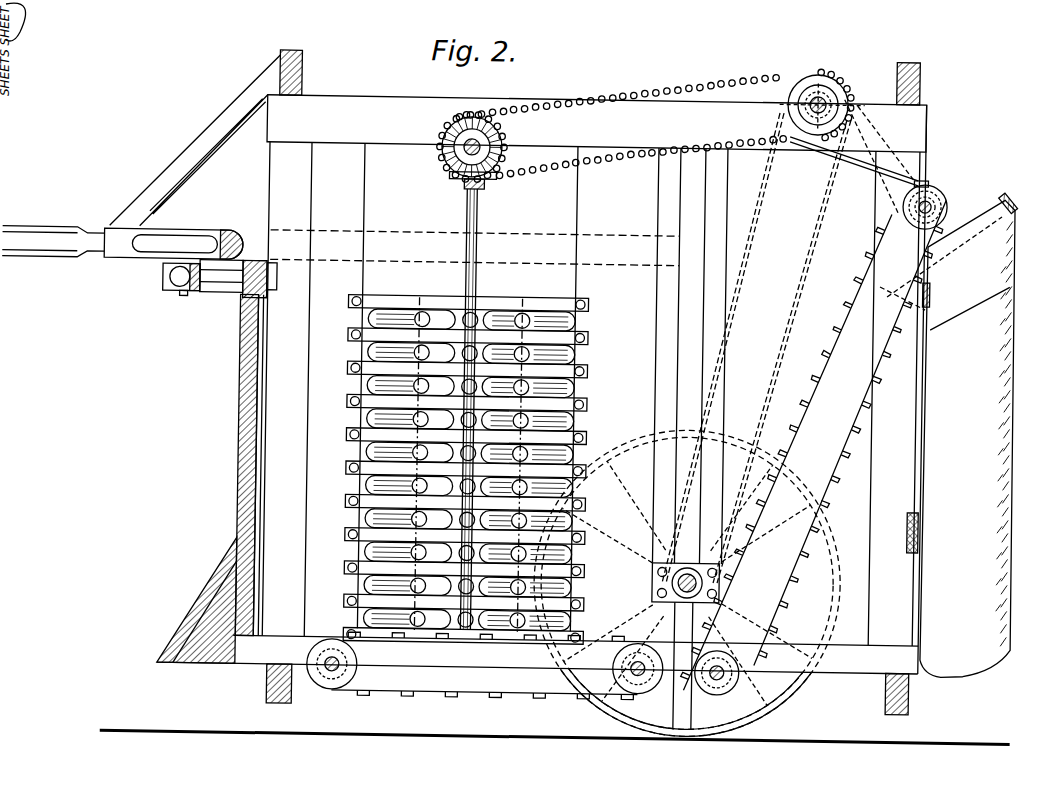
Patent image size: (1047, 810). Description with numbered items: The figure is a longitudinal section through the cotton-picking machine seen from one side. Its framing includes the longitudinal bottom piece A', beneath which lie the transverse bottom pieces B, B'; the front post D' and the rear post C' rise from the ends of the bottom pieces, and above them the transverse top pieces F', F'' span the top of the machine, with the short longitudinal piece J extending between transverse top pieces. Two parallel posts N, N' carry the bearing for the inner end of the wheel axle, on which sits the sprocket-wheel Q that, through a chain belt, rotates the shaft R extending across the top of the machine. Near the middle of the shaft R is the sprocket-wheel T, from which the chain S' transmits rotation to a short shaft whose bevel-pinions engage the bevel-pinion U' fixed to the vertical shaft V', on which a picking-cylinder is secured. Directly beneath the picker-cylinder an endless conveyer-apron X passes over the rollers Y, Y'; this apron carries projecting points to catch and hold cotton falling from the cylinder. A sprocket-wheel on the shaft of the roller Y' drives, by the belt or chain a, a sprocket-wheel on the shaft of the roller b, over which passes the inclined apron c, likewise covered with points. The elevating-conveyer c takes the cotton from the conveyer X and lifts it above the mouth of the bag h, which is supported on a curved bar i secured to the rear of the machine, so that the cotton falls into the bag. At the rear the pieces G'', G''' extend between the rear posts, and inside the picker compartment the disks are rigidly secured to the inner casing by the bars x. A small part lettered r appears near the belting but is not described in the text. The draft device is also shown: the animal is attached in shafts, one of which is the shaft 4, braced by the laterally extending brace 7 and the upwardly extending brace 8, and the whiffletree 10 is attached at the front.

The transverse bottom piece B' is at (597, 123).
The front post D' is at (287, 389).
The rear post C' is at (897, 389).
The longitudinal bottom piece A' is at (537, 654).
The transverse bottom piece B is at (587, 697).
The transverse top piece F' is at (300, 73).
The transverse top piece F'' is at (919, 84).
The short longitudinal piece J is at (210, 478).
The whiffletree 10 is at (210, 280).
The shaft 4 is at (53, 242).
The brace 7 is at (173, 243).
The brace 8 is at (195, 140).
The sprocket-wheel T is at (472, 143).
The bevel-pinion U' is at (460, 173).
The vertical shaft V' is at (477, 409).
The chain S' is at (621, 127).
The shaft R is at (822, 105).
The belt r is at (766, 227).
The belt or chain a is at (824, 417).
The parallel post N' is at (756, 348).
The parallel post N is at (687, 583).
The sprocket-wheel Q is at (686, 571).
The endless conveyer-apron X is at (484, 666).
The roller Y is at (339, 663).
The roller Y' is at (631, 668).
The roller b is at (718, 667).
The elevating apron c is at (813, 445).
The bag h is at (945, 438).
The curved bar i is at (1005, 195).
The rear transverse piece G'' is at (939, 298).
The rear transverse piece G''' is at (924, 533).
The bar x is at (465, 469).